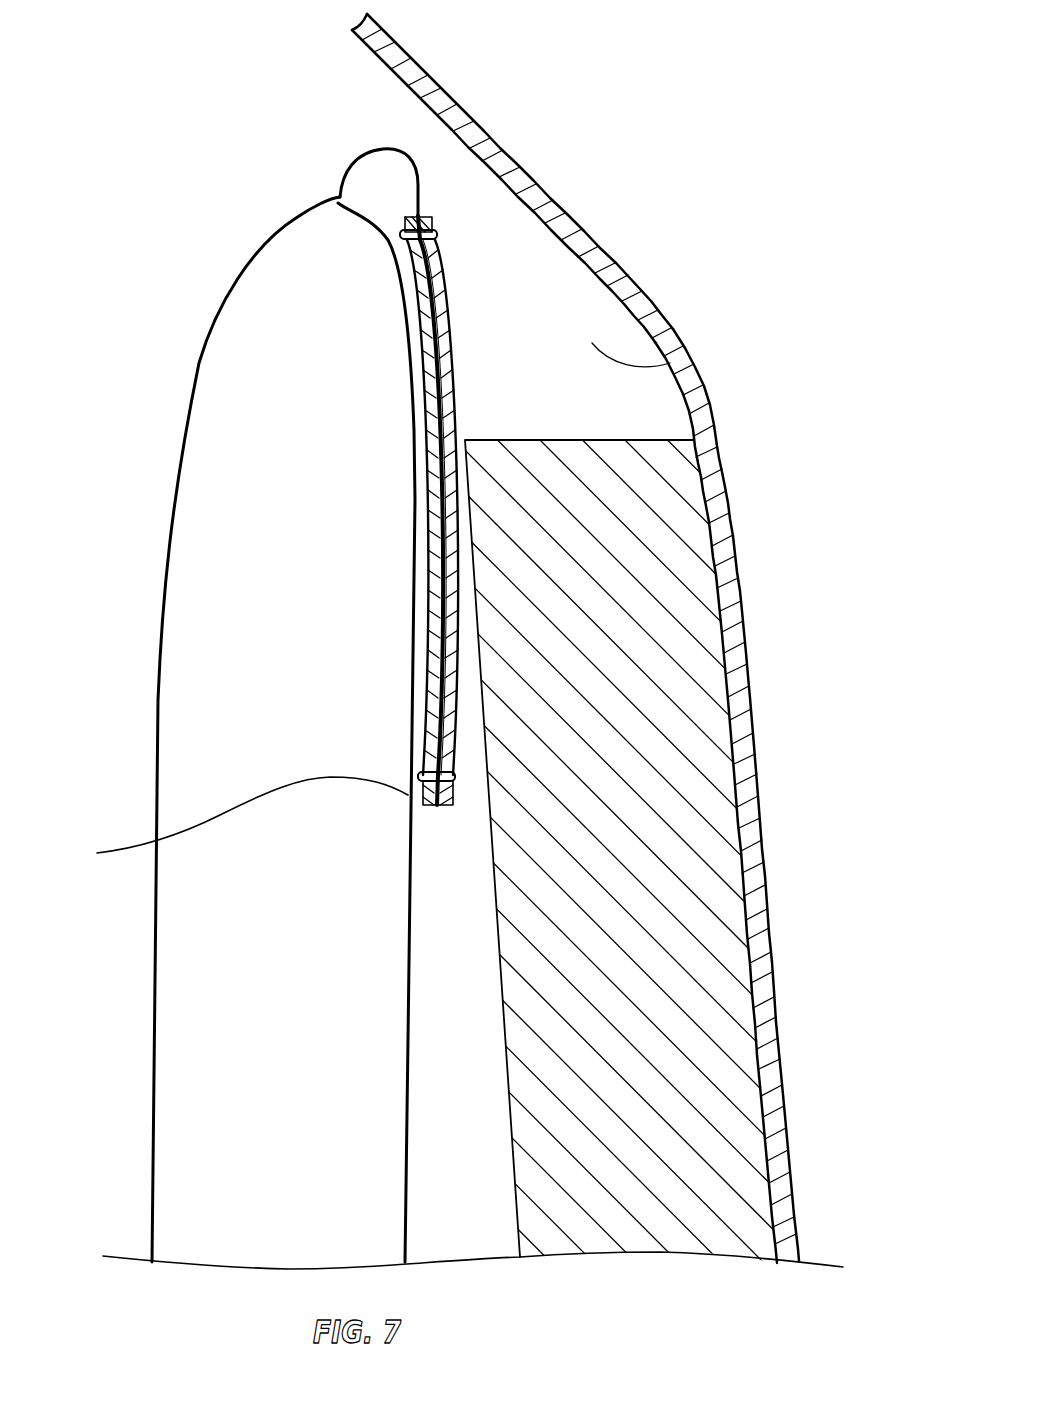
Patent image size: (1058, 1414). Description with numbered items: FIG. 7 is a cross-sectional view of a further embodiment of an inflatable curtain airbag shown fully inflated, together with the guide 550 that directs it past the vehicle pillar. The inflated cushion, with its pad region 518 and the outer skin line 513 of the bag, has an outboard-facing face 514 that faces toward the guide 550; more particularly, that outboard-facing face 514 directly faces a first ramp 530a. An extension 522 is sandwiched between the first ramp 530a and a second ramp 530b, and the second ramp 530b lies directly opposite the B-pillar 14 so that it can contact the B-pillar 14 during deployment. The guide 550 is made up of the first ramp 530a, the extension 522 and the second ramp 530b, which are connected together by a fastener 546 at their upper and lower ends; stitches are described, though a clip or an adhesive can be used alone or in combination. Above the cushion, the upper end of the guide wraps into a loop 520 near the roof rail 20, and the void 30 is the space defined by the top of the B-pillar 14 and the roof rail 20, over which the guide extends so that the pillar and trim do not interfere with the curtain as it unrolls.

The B-pillar 14 is at (565, 440).
The vehicle roof rail 20 is at (622, 280).
The void 30 is at (676, 357).
The finger 513 is at (176, 535).
The outboard-facing face 514 is at (232, 823).
The finger pad 518 is at (319, 507).
The fingernail loop 520 is at (358, 157).
The extension 522 is at (440, 308).
The first ramp 530a is at (440, 263).
The second ramp 530b is at (447, 343).
The fastener 546 is at (438, 231).
The guide 550 is at (578, 42).